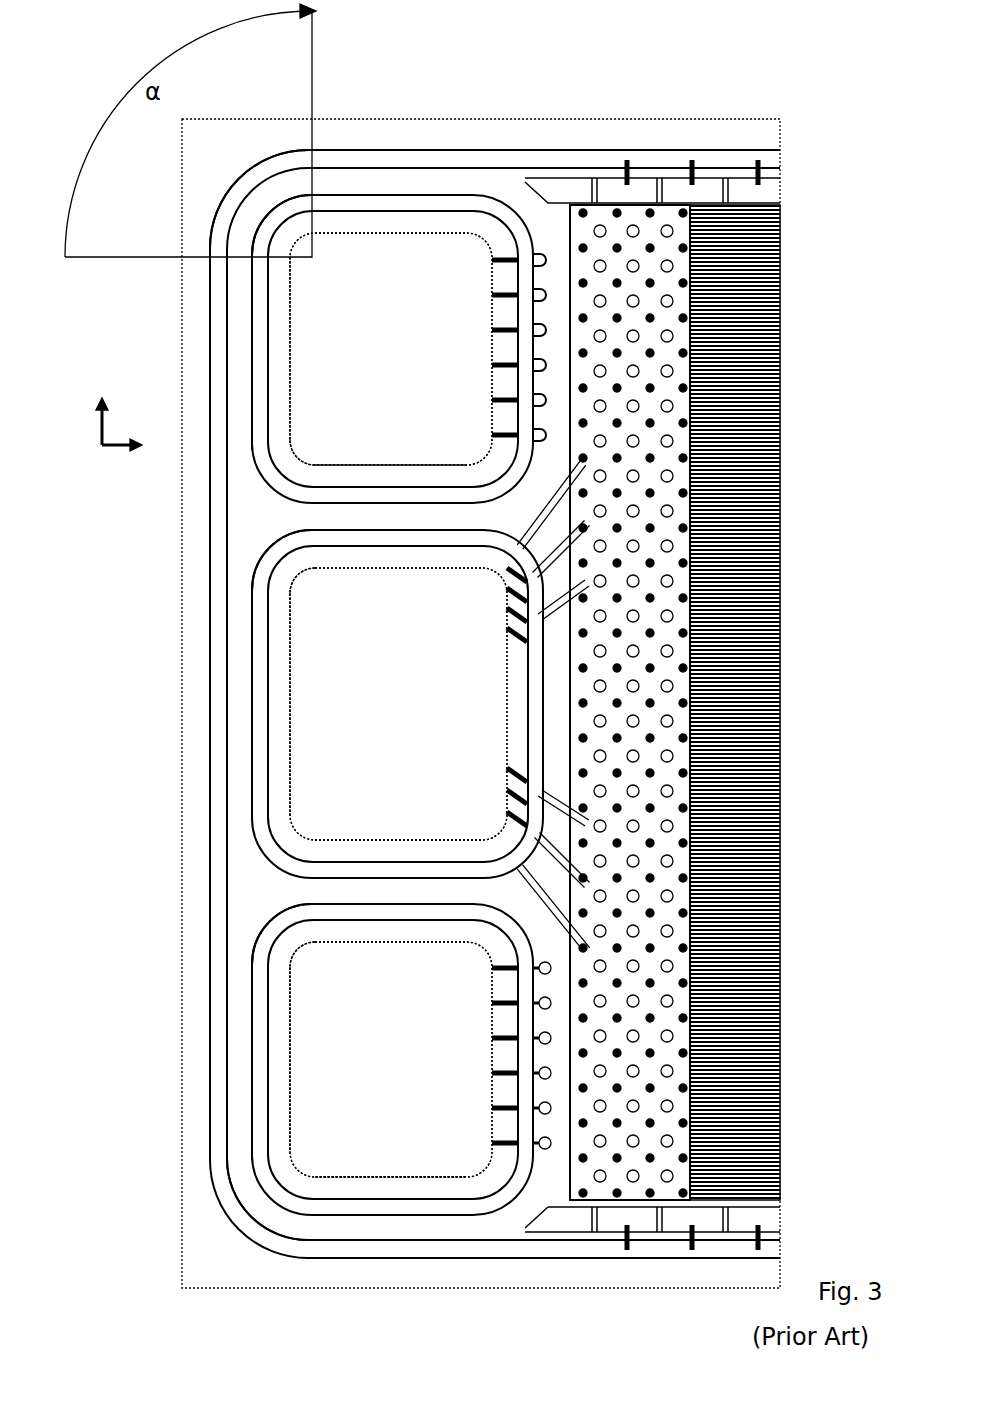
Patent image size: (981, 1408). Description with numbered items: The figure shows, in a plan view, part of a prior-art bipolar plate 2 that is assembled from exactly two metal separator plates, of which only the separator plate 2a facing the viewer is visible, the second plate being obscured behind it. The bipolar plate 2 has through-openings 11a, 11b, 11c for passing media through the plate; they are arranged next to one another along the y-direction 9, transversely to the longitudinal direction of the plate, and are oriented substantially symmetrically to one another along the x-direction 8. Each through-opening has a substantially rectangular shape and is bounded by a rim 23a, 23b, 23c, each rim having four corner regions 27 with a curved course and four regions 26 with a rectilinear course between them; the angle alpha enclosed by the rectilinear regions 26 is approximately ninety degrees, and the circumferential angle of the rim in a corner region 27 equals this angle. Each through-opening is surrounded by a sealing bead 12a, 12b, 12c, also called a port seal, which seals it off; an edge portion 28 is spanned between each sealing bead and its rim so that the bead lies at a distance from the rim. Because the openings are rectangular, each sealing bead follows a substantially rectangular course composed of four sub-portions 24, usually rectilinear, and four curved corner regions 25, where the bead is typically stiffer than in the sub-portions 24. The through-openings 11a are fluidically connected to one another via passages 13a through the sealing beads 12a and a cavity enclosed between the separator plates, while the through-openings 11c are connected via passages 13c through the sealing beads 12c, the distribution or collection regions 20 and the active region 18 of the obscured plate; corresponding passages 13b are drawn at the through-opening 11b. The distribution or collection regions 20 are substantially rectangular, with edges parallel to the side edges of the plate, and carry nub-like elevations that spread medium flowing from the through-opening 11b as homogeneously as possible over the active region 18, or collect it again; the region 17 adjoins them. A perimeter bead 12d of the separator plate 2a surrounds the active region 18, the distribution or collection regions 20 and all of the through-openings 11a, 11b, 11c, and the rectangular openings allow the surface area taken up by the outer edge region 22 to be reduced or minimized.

The bipolar plate 2 is at (190, 1302).
The separator plate 2a is at (200, 228).
The x-direction 8 is at (122, 445).
The y-direction 9 is at (100, 425).
The through-opening 11a is at (402, 693).
The through-opening 11b is at (407, 1073).
The through-opening 11c is at (402, 360).
The sealing bead 12a is at (260, 690).
The sealing bead 12b is at (262, 1102).
The sealing bead 12c is at (260, 330).
The perimeter bead 12d is at (228, 1160).
The passages 13a is at (502, 838).
The connecting rungs of second region 13b is at (500, 1150).
The passages 13c is at (497, 262).
The hatched contact region 17 is at (750, 580).
The active region 18 is at (760, 455).
The distribution or collection region 20 is at (625, 1130).
The outer edge region 22 is at (335, 130).
The rim 23a is at (352, 838).
The rim 23b is at (428, 1178).
The rim 23c is at (420, 462).
The sub-portions 24 is at (430, 200).
The corner regions 25 is at (272, 222).
The regions with a rectilinear course 26 is at (370, 238).
The corner regions 27 is at (302, 453).
The edge portion 28 is at (290, 350).